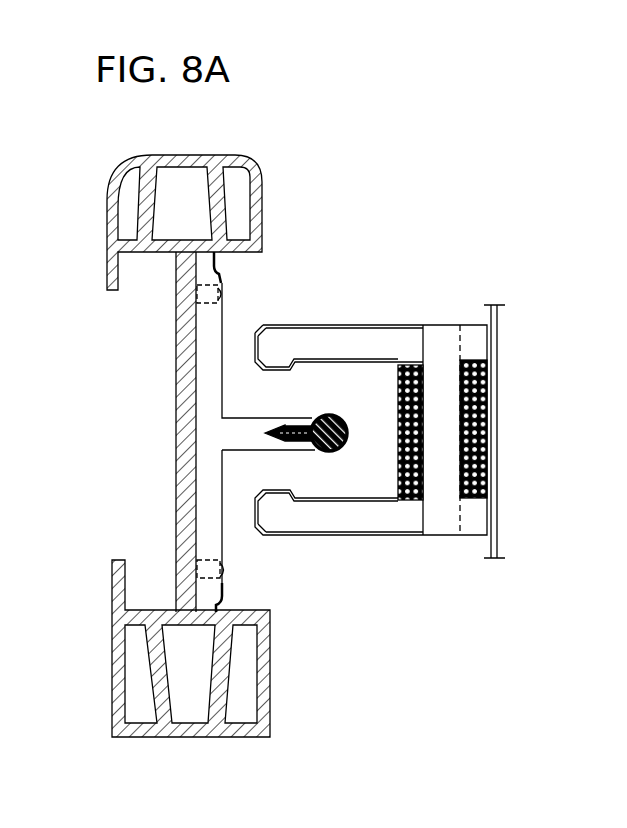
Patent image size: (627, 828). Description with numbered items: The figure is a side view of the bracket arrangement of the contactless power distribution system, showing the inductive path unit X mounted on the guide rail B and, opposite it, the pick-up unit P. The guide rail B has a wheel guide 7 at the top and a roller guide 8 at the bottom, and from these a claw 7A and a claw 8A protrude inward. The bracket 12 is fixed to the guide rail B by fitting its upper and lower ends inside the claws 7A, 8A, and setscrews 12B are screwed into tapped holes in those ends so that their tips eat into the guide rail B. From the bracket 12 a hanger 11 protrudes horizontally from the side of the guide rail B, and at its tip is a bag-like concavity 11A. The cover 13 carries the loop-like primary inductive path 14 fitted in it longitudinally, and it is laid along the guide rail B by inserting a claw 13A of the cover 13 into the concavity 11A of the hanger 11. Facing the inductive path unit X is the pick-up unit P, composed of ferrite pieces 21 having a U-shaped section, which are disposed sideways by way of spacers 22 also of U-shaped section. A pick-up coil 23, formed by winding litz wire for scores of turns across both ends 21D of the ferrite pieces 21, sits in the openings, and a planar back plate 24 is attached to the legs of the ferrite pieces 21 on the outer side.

The wheel guide 7 is at (253, 160).
The claw 7A is at (218, 267).
The roller guide 8 is at (268, 660).
The claw 8A is at (227, 597).
The hanger 11 is at (240, 425).
The bag-like concavity 11A is at (297, 423).
The bracket 12 is at (213, 325).
The setscrew 12B is at (178, 302).
The cover 13 is at (333, 413).
The claw 13A is at (287, 445).
The primary inductive path 14 is at (346, 442).
The ferrite piece 21 is at (333, 338).
The end of ferrite piece 21D is at (445, 512).
The spacer 22 is at (440, 343).
The pick-up coil 23 is at (487, 388).
The back plate 24 is at (495, 470).
The guide rail B is at (115, 178).
The pick-up unit P is at (378, 321).
The inductive path unit X is at (214, 412).